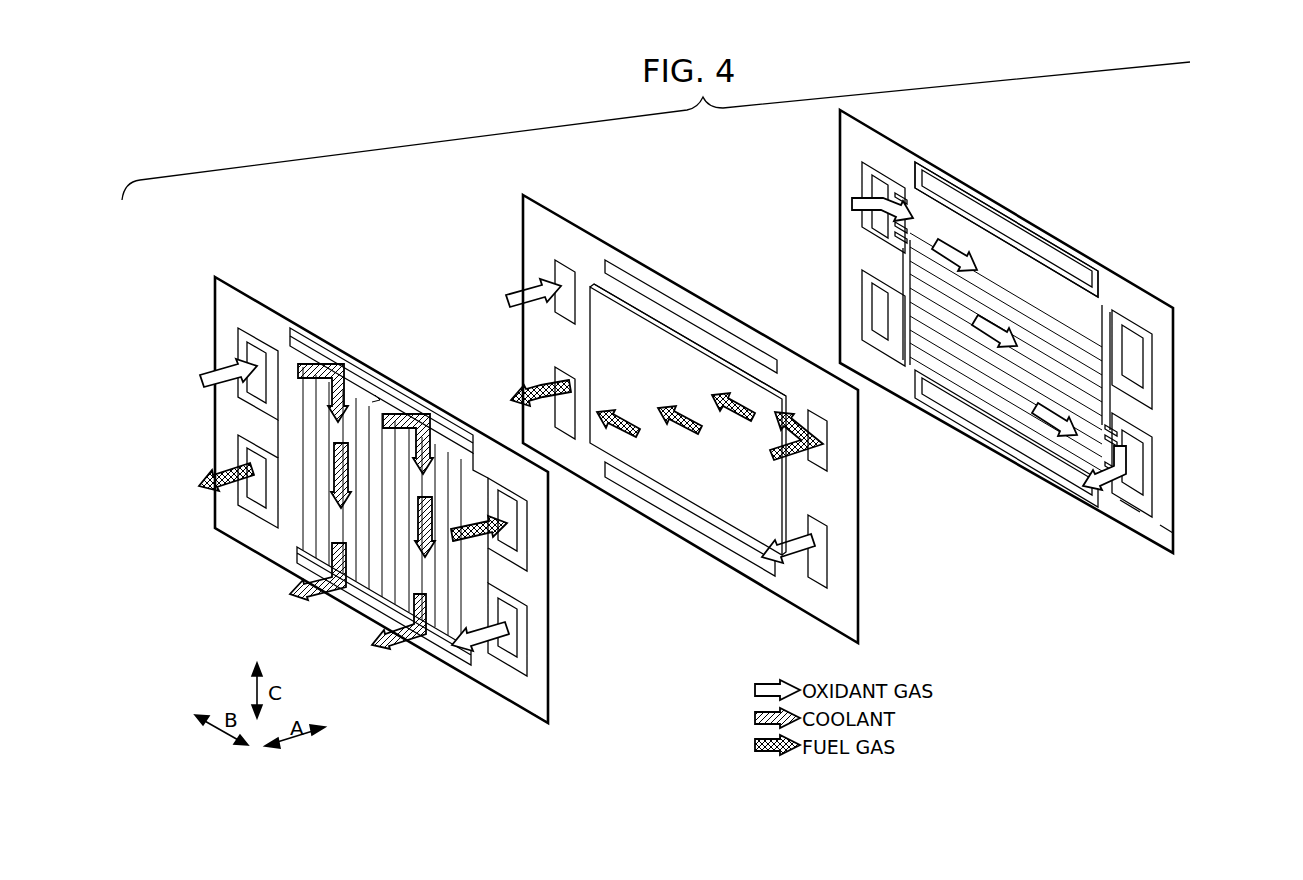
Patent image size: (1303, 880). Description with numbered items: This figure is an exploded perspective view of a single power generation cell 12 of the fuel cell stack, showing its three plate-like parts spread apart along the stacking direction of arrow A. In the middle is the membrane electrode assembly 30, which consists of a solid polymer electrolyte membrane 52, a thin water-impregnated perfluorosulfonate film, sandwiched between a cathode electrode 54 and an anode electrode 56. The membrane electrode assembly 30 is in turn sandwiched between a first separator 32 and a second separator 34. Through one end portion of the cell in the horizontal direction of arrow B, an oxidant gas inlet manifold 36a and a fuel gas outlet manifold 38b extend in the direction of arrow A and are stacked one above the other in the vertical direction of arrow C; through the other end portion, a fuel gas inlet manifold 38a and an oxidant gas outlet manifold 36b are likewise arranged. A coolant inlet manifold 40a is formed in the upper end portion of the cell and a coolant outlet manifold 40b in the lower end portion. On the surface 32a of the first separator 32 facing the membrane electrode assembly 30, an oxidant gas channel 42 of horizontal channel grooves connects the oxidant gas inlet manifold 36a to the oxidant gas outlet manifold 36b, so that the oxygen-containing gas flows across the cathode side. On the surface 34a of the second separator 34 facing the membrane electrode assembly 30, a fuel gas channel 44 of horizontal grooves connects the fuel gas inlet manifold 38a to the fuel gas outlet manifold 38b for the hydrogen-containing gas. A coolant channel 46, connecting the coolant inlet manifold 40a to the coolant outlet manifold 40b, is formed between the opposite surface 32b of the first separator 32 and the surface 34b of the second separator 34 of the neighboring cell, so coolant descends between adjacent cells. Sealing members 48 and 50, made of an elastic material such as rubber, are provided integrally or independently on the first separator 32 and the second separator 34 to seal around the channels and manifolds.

The power generation cell 12 is at (640, 109).
The membrane electrode assembly 30 is at (518, 218).
The first separator 32 is at (834, 135).
The surface of the first separator 32a is at (1118, 500).
The surface of the first separator 32b is at (1155, 522).
The second separator 34 is at (210, 302).
The surface of the second separator 34a is at (530, 700).
The surface of the second separator 34b is at (495, 670).
The oxidant gas inlet manifold 36a is at (250, 355).
The oxidant gas outlet manifold 36b is at (515, 640).
The fuel gas inlet manifold 38a is at (515, 523).
The fuel gas outlet manifold 38b is at (250, 458).
The coolant inlet manifold 40a is at (310, 355).
The coolant outlet manifold 40b is at (357, 588).
The oxidant gas channel 42 is at (960, 373).
The fuel gas channel 44 is at (378, 398).
The coolant channel 46 is at (310, 512).
The sealing member 48 is at (953, 180).
The sealing member 50 is at (358, 366).
The solid polymer electrolyte membrane 52 is at (828, 608).
The cathode electrode 54 is at (663, 347).
The anode electrode 56 is at (622, 322).